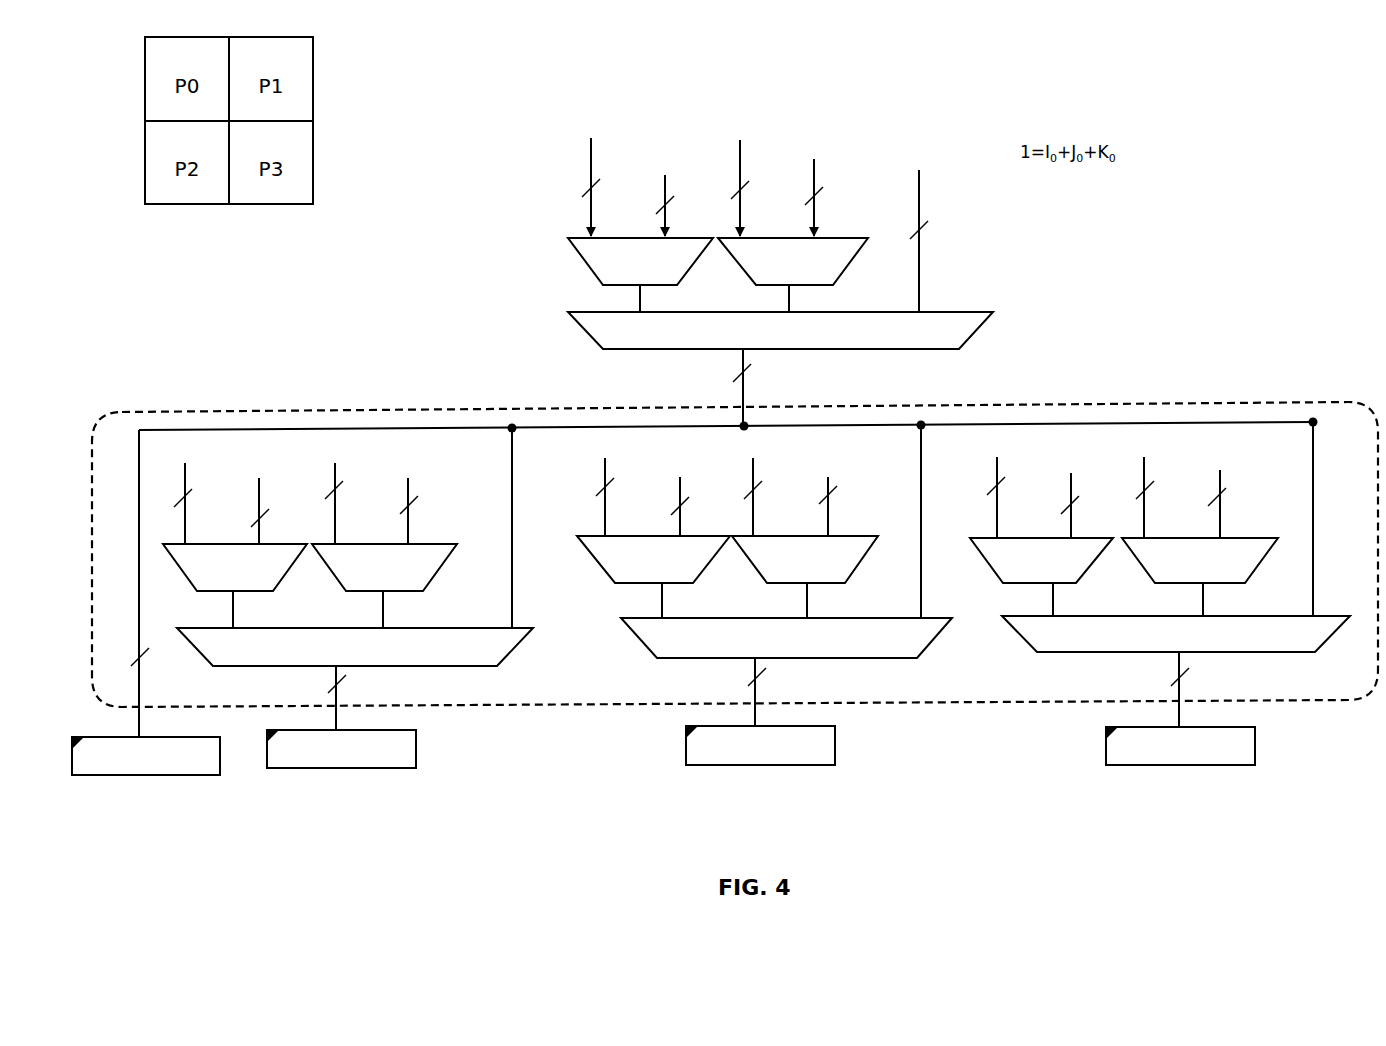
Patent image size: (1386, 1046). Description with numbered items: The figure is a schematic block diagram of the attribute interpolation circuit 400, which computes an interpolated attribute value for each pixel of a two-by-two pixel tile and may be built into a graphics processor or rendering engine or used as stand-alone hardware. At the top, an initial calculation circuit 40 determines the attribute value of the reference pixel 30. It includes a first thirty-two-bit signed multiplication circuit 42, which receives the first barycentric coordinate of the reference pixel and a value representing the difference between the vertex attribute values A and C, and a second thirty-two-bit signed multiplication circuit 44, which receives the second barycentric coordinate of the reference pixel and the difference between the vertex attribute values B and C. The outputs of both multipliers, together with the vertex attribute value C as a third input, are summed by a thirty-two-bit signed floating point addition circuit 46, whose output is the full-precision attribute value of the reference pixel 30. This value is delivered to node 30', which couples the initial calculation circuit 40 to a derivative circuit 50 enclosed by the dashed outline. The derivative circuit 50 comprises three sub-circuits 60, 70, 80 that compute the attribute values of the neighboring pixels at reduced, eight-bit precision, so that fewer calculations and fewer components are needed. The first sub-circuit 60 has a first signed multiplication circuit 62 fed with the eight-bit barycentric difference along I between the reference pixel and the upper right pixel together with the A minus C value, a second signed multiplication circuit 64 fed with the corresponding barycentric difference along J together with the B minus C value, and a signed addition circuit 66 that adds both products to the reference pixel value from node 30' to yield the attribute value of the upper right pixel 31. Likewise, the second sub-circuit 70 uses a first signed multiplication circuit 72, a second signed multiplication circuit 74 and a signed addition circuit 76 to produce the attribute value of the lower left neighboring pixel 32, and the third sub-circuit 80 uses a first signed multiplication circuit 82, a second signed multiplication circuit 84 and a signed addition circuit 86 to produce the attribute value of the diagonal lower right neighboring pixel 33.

The attribute interpolation circuit 400 is at (1210, 317).
The initial calculation circuit 40 is at (490, 315).
The first 32-bit signed multiplication circuit 42 is at (585, 263).
The second 32-bit signed multiplication circuit 44 is at (862, 245).
The 32-bit signed floating point addition circuit 46 is at (640, 352).
The node 30' is at (728, 403).
The derivative circuit 50 is at (1037, 779).
The first sub-circuit 60 is at (497, 706).
The first signed multiplication circuit 62 is at (183, 573).
The second signed multiplication circuit 64 is at (450, 548).
The signed addition circuit 66 is at (420, 665).
The second sub-circuit 70 is at (945, 705).
The first signed multiplication circuit 72 is at (597, 560).
The second signed multiplication circuit 74 is at (870, 545).
The signed addition circuit 76 is at (850, 658).
The third sub-circuit 80 is at (1317, 702).
The first signed multiplication circuit 82 is at (987, 565).
The second signed multiplication circuit 84 is at (1268, 547).
The signed addition circuit 86 is at (1052, 653).
The reference pixel P0 30 is at (151, 774).
The pixel P1 31 is at (393, 768).
The neighboring pixel P2 32 is at (803, 765).
The neighboring pixel P3 33 is at (1228, 765).